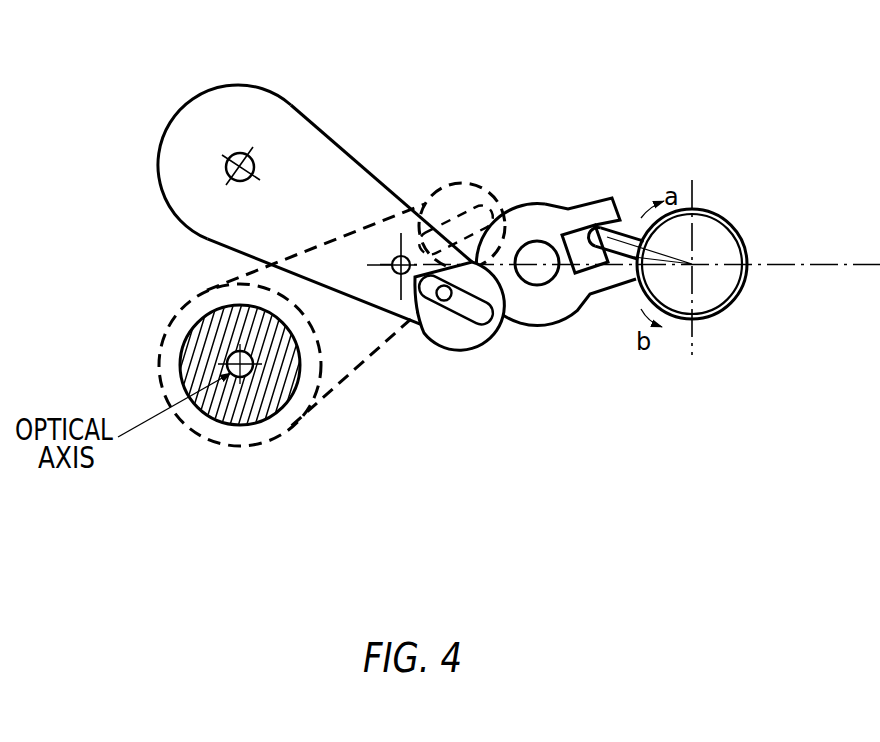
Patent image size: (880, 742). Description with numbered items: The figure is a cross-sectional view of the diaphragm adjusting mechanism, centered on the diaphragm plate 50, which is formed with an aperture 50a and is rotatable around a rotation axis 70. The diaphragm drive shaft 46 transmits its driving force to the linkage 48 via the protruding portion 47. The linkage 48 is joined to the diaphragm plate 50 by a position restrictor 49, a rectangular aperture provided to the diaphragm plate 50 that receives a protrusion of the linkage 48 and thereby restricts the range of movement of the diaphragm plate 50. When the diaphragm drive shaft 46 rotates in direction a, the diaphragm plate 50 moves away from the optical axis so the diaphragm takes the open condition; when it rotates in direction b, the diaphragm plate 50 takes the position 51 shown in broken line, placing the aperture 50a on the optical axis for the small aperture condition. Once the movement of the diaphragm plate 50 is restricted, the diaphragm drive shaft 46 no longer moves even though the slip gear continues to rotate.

The diaphragm plate 50 is at (274, 92).
The aperture 50a is at (223, 167).
The position of the diaphragm plate 51 is at (312, 406).
The linkage 48 is at (540, 205).
The position restrictor 49 is at (475, 205).
The rotation axis 70 is at (403, 259).
The protruding portion 47 is at (615, 235).
The diaphragm drive shaft 46 is at (676, 300).